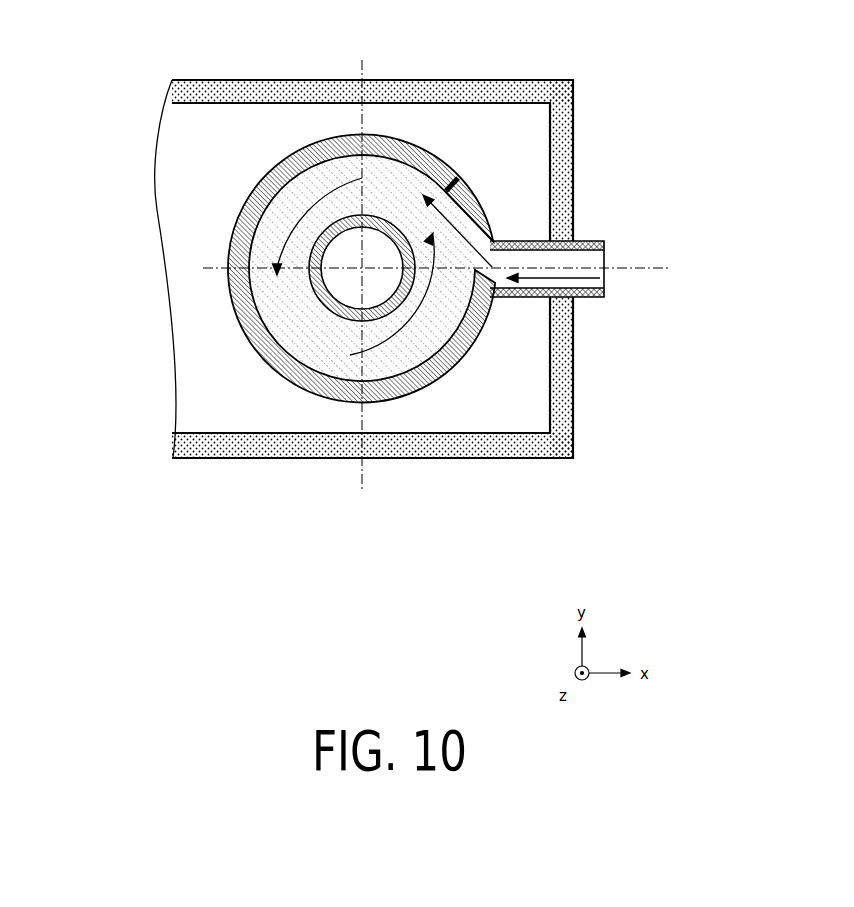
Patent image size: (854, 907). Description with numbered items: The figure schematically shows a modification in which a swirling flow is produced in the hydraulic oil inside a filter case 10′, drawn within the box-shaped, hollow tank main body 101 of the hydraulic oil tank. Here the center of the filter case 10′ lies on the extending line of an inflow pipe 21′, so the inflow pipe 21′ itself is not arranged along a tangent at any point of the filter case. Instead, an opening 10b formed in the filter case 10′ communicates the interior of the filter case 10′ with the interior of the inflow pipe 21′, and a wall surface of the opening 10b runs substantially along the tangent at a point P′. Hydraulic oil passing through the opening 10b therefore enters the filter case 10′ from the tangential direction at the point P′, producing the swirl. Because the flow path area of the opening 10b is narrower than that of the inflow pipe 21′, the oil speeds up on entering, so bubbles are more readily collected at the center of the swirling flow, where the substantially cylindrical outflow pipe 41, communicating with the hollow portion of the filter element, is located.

The tank main body 101 is at (465, 88).
The inflow pipe 21′ is at (573, 242).
The filter case 10′ is at (262, 353).
The opening 10b is at (488, 232).
The outflow pipe 41 is at (320, 247).
The point P′ is at (452, 182).